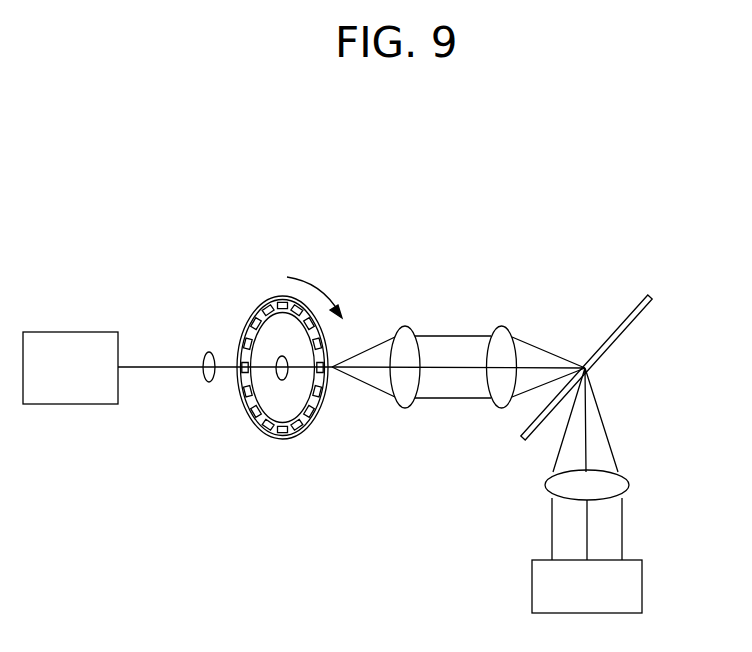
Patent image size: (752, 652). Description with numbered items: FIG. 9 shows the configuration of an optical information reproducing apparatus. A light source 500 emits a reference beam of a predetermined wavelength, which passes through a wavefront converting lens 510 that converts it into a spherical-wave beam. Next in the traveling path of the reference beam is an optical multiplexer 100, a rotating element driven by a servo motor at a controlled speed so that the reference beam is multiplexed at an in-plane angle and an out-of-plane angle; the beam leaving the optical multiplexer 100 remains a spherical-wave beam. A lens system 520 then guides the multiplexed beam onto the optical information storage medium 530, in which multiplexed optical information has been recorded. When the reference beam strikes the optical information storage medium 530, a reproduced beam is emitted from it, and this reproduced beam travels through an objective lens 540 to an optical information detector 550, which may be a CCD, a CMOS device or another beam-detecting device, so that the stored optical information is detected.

The optical multiplexer 100 is at (283, 440).
The light source 500 is at (100, 332).
The wavefront converting lens 510 is at (205, 384).
The lens system 520 is at (512, 315).
The optical information storage medium 530 is at (633, 327).
The objective lens 540 is at (629, 486).
The optical information detector 550 is at (532, 580).